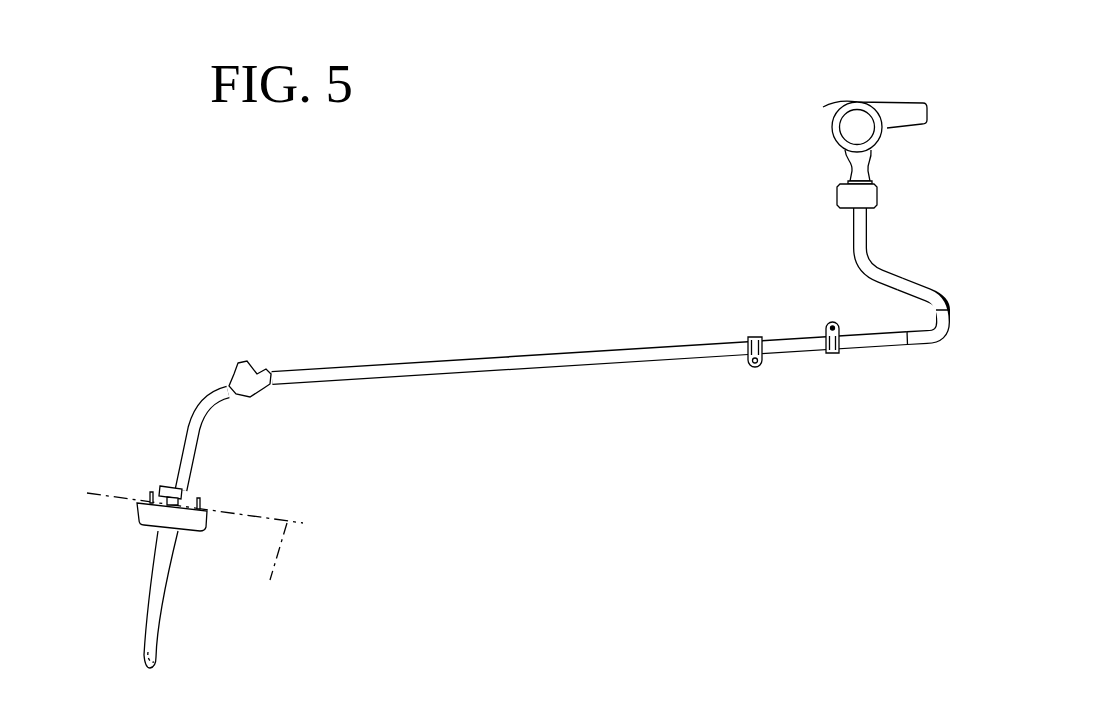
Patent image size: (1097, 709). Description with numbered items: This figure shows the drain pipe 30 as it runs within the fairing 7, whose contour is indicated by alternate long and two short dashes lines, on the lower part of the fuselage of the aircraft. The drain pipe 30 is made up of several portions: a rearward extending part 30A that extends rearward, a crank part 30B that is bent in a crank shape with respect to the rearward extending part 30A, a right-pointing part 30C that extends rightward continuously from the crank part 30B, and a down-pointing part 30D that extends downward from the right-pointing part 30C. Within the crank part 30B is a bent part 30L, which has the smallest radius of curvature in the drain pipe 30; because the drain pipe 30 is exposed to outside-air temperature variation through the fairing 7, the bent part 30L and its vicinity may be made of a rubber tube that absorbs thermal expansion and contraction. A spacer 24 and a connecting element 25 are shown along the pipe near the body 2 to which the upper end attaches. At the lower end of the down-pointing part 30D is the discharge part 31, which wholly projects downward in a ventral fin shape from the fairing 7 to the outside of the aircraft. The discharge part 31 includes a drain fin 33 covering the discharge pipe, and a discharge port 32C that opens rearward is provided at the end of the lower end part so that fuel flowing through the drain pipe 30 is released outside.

The internal combustion engine body / cylinder head 2 is at (829, 127).
The fairing 7 is at (195, 553).
The spacer 24 is at (927, 348).
The connector 25 is at (882, 202).
The drain pipe 30 is at (533, 346).
The rearward extending part 30A is at (917, 289).
The crank part 30B is at (953, 302).
The right-pointing part 30C is at (462, 357).
The down-pointing part 30D is at (183, 435).
The bent part 30L is at (950, 346).
The discharge part 31 is at (152, 608).
The discharge port 32C is at (142, 650).
The drain fin 33 is at (158, 650).